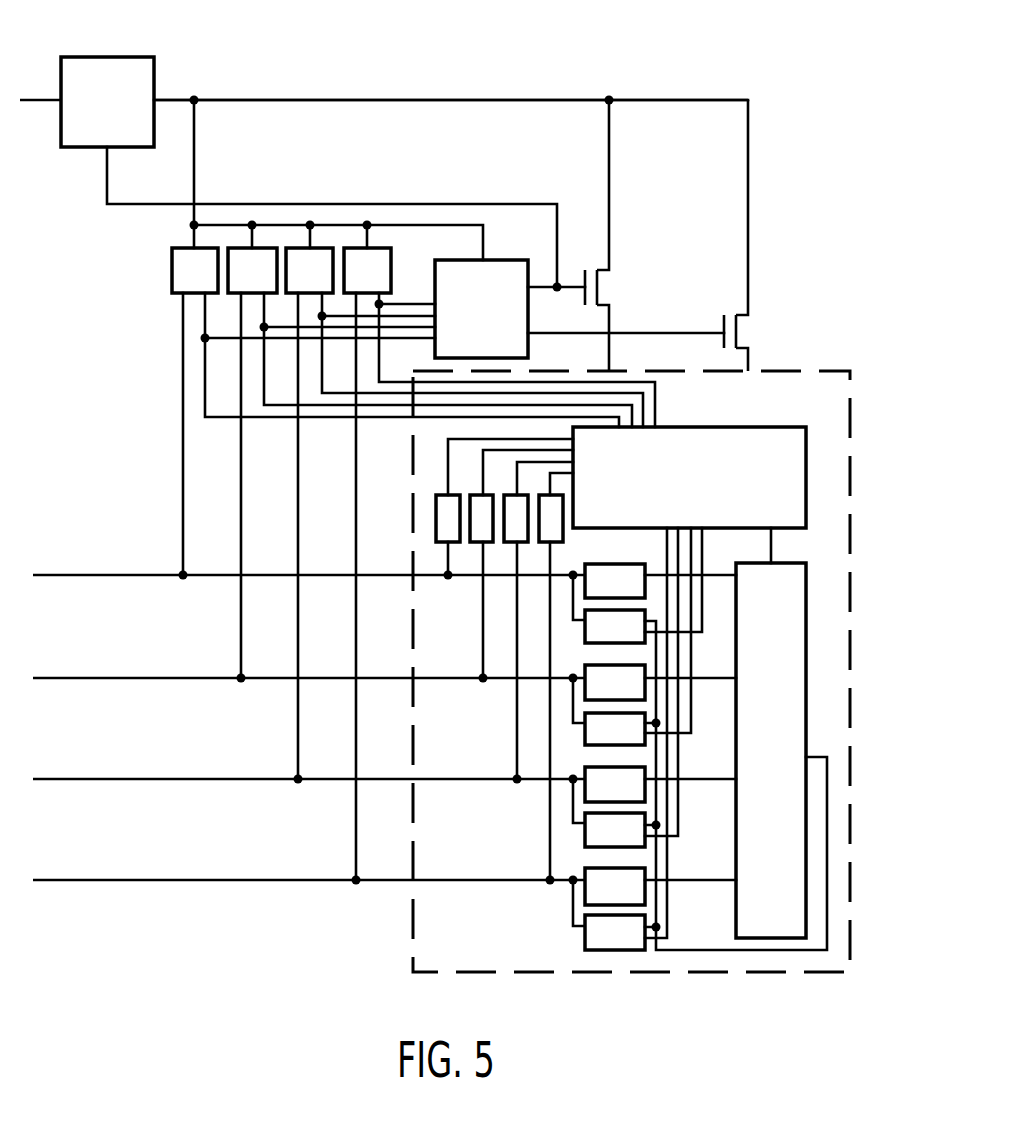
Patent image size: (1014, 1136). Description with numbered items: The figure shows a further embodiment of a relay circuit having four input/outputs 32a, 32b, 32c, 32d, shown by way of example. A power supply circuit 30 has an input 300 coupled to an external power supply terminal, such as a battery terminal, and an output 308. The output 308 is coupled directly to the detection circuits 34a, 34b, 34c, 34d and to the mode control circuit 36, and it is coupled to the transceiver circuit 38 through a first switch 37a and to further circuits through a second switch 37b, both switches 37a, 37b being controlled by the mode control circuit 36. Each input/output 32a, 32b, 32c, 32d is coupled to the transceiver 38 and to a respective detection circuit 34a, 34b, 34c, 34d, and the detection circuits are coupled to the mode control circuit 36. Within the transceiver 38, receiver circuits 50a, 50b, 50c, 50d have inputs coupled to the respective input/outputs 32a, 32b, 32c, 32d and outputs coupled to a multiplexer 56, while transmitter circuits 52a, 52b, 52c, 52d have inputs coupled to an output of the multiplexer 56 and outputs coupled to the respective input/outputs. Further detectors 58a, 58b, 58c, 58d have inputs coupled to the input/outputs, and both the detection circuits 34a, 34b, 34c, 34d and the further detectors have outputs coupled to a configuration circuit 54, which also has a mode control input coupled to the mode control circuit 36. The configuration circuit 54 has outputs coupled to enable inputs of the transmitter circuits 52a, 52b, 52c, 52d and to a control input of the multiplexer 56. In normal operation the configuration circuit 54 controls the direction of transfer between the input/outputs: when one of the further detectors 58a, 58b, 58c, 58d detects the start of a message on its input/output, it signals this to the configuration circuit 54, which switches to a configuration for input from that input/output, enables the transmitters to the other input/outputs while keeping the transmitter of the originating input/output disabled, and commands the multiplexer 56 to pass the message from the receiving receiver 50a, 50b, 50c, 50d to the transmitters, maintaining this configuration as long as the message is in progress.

The input 300 is at (47, 100).
The power supply circuit 30 is at (114, 65).
The output 308 is at (258, 100).
The detection circuit 34a is at (205, 253).
The detection circuit 34b is at (263, 253).
The detection circuit 34c is at (321, 253).
The detection circuit 34d is at (378, 253).
The mode control circuit 36 is at (506, 265).
The first switch 37a is at (607, 290).
The second switch 37b is at (723, 321).
The transceiver circuit 38 is at (658, 371).
The configuration circuit 54 is at (767, 437).
The multiplexer 56 is at (790, 652).
The further detector 58a is at (440, 521).
The further detector 58b is at (478, 495).
The further detector 58c is at (515, 495).
The further detector 58d is at (553, 535).
The receiver circuit 50a is at (593, 587).
The receiver circuit 50b is at (593, 688).
The receiver circuit 50c is at (593, 790).
The receiver circuit 50d is at (593, 893).
The transmitter circuit 52a is at (593, 630).
The transmitter circuit 52b is at (593, 733).
The transmitter circuit 52c is at (593, 838).
The transmitter circuit 52d is at (593, 940).
The input/output 32a is at (87, 575).
The input/output 32b is at (87, 678).
The input/output 32c is at (87, 779).
The input/output 32d is at (87, 880).